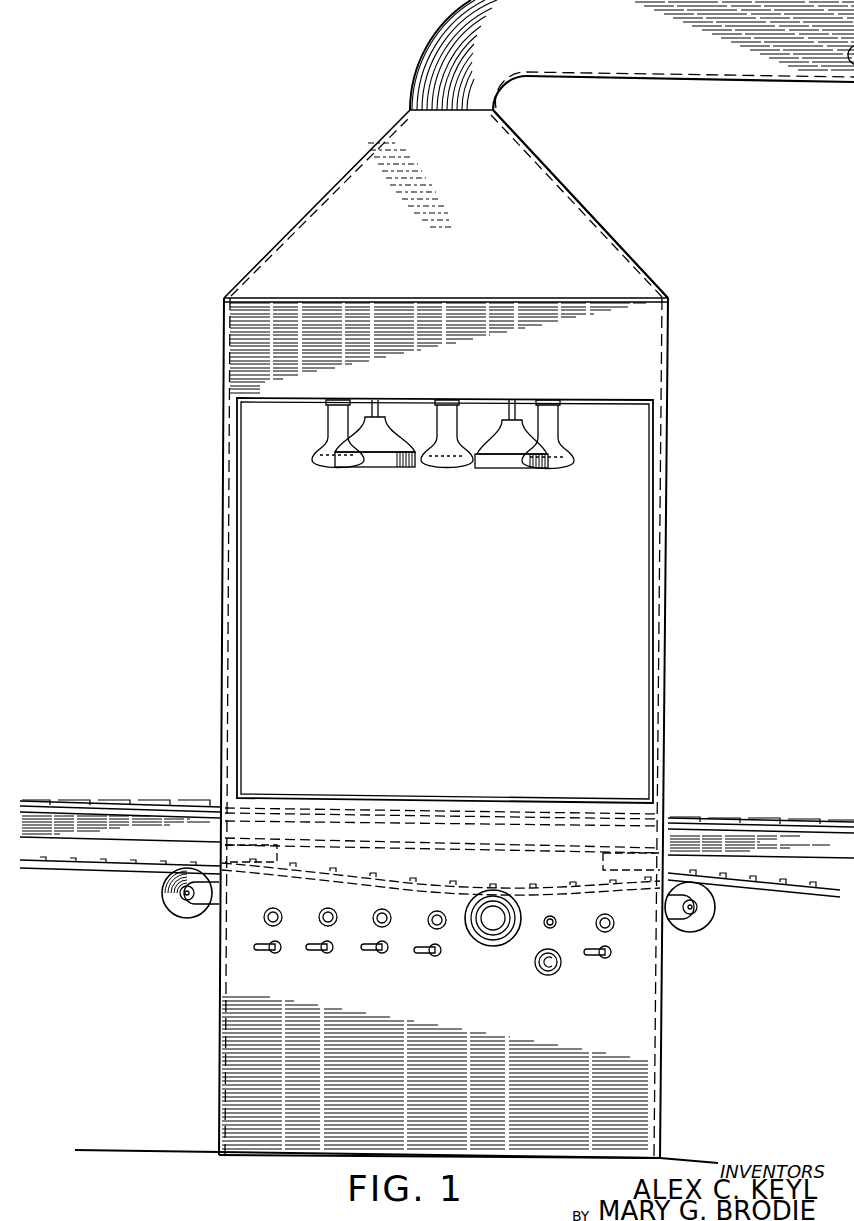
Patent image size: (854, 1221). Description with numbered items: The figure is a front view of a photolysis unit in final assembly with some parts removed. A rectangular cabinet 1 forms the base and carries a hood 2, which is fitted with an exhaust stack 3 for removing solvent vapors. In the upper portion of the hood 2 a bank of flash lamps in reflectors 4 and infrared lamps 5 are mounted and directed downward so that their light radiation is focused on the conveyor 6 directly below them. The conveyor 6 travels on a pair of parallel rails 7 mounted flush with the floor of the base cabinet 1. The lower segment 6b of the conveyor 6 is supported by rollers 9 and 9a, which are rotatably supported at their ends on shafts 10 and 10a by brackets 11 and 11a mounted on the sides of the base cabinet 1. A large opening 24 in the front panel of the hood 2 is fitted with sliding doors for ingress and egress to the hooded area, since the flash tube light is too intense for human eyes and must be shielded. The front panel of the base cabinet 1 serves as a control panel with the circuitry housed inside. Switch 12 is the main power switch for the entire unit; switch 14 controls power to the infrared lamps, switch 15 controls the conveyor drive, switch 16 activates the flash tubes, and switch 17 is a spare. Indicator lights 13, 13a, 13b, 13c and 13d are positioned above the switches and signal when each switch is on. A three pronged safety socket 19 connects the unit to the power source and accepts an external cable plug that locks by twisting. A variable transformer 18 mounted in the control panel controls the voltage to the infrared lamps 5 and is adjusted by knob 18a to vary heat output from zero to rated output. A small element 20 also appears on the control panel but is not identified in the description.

The cabinet 1 is at (663, 1067).
The hood 2 is at (670, 548).
The exhaust stack 3 is at (655, 82).
The flash lamps in reflectors 4 is at (388, 468).
The infrared lamps 5 is at (320, 462).
The conveyor 6 is at (86, 802).
The lower segment of conveyor 6b is at (808, 878).
The rails 7 is at (157, 828).
The roller 9 is at (708, 912).
The roller 9a is at (176, 908).
The shaft 10 is at (693, 914).
The shaft 10a is at (182, 894).
The bracket 11 is at (680, 920).
The bracket 11a is at (214, 905).
The switch 12 is at (607, 960).
The indicator light 13 is at (612, 920).
The indicator light 13a is at (447, 894).
The indicator light 13b is at (366, 895).
The indicator light 13c is at (328, 908).
The indicator light 13d is at (273, 908).
The switch 14 is at (380, 955).
The switch 15 is at (327, 955).
The switch 16 is at (275, 955).
The switch 17 is at (432, 958).
The variable transformer 18 is at (478, 940).
The knob 18a is at (495, 925).
The three pronged safety socket 19 is at (548, 975).
The pilot light 20 is at (556, 920).
The opening 24 is at (640, 660).